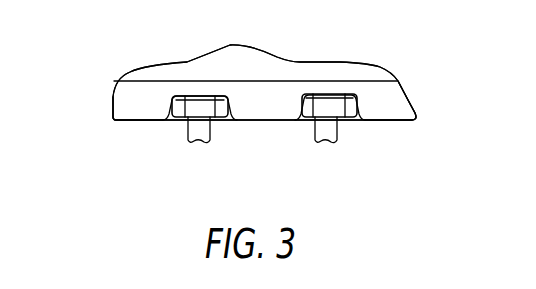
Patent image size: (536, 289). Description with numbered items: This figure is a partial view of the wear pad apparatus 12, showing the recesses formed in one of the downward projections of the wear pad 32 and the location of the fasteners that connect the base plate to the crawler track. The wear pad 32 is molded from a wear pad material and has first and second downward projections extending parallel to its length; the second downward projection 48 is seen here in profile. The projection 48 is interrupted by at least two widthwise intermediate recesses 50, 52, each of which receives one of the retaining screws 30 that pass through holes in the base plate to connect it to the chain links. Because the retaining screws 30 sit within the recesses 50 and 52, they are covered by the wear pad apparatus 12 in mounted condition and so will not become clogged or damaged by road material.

The wear pad apparatus 12 is at (190, 67).
The wear pad 32 is at (190, 67).
The second downward projection 48 is at (128, 98).
The retaining screws 30 is at (198, 110).
The intermediate recess 50 is at (168, 118).
The intermediate recess 52 is at (300, 118).